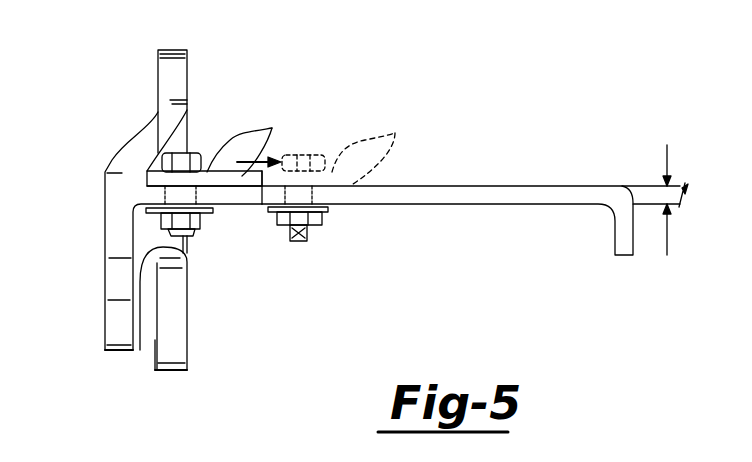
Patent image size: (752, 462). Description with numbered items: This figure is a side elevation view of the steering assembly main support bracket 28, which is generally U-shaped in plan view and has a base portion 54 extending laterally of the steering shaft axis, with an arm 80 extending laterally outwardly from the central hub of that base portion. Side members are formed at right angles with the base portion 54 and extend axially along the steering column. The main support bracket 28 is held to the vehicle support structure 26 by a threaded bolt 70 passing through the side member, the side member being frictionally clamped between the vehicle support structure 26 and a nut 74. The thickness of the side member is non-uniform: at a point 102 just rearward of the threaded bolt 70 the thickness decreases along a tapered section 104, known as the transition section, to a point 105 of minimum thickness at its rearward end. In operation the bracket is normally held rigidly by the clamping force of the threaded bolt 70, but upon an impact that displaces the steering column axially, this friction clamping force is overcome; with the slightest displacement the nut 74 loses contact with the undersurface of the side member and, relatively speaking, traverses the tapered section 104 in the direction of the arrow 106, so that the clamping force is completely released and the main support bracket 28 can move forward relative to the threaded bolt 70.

The vehicle support structure 26 is at (250, 130).
The main support bracket 28 is at (513, 176).
The base portion 54 is at (152, 356).
The threaded bolt 70 is at (190, 153).
The nut 74 is at (200, 230).
The arm 80 is at (106, 303).
The point 102 is at (202, 190).
The tapered section 104 is at (214, 190).
The point of minimum thickness 105 is at (273, 232).
The arrow 106 is at (270, 160).